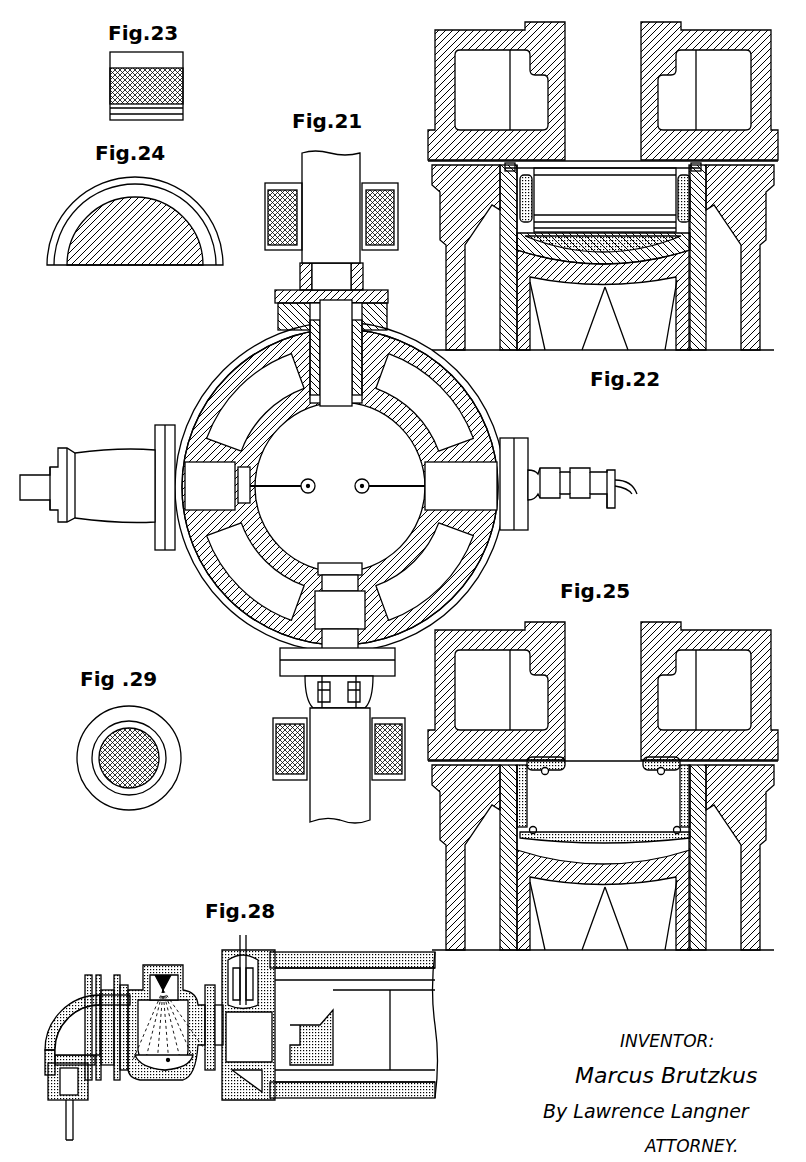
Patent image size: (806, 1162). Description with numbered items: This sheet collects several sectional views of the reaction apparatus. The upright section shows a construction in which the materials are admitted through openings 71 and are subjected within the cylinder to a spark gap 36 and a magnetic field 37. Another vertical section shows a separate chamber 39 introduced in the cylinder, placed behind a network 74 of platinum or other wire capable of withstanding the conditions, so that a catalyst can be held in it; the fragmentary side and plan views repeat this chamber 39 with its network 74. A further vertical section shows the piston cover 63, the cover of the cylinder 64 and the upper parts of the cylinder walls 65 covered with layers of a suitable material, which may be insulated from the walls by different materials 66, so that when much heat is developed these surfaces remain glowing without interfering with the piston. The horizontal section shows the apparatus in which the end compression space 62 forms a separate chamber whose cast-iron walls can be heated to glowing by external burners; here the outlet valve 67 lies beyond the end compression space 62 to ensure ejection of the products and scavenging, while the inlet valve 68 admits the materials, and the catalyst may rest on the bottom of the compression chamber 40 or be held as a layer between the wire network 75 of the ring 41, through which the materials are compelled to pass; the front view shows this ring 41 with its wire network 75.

In FIG. 23, the network 74 is at (183, 88).
In FIG. 24, the network 74 is at (108, 268).
In FIG. 22, the network 74 is at (532, 196).
In FIG. 21, the magnetic field 37 is at (340, 407).
In FIG. 21, the spark gap 36 is at (358, 493).
In FIG. 21, the openings 71 is at (305, 402).
In FIG. 22, the separate chamber 39 is at (678, 190).
In FIG. 25, the insulating materials 66 is at (566, 762).
In FIG. 25, the upper parts of the cylinder walls 65 is at (664, 772).
In FIG. 25, the cover of the cylinder 64 is at (683, 803).
In FIG. 25, the piston cover 63 is at (566, 832).
In FIG. 28, the ring 41 is at (108, 940).
In FIG. 28, the inlet valve 68 is at (249, 946).
In FIG. 28, the wire network 75 is at (96, 1030).
In FIG. 28, the end compression space 62 is at (166, 1022).
In FIG. 28, the outlet valve 67 is at (50, 1080).
In FIG. 28, the compression chamber 40 is at (170, 1066).